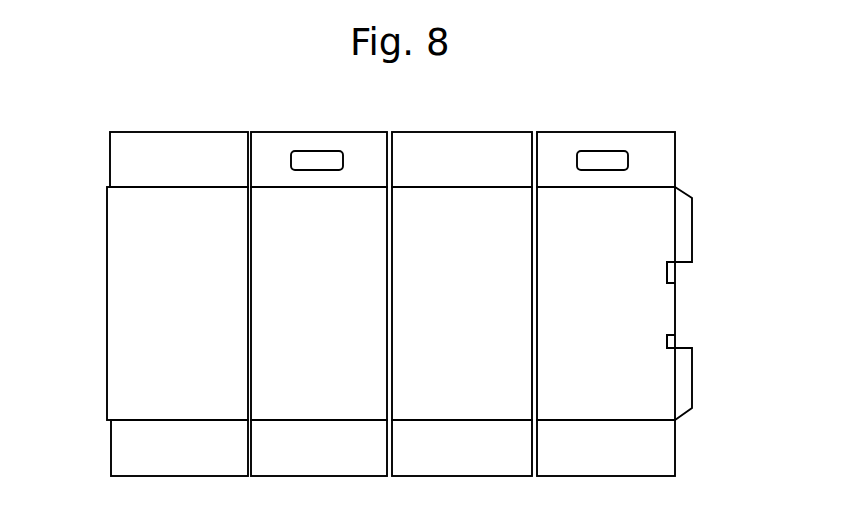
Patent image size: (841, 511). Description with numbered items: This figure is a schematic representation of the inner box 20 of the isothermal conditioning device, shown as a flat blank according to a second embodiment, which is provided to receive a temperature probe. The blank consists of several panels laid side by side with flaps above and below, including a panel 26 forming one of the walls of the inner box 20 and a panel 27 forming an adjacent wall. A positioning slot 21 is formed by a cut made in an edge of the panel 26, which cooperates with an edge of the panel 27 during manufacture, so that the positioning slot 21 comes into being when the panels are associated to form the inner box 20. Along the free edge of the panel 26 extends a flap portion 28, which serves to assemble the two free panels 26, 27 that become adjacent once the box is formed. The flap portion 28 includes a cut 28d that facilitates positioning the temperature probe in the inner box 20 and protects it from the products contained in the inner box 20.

The inner box 20 is at (179, 96).
The positioning slot 21 is at (696, 283).
The panel 26 is at (628, 225).
The panel 27 is at (143, 350).
The flap portion 28 is at (684, 223).
The cut 28d is at (693, 332).